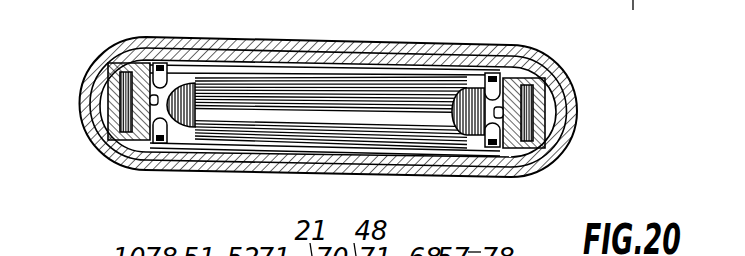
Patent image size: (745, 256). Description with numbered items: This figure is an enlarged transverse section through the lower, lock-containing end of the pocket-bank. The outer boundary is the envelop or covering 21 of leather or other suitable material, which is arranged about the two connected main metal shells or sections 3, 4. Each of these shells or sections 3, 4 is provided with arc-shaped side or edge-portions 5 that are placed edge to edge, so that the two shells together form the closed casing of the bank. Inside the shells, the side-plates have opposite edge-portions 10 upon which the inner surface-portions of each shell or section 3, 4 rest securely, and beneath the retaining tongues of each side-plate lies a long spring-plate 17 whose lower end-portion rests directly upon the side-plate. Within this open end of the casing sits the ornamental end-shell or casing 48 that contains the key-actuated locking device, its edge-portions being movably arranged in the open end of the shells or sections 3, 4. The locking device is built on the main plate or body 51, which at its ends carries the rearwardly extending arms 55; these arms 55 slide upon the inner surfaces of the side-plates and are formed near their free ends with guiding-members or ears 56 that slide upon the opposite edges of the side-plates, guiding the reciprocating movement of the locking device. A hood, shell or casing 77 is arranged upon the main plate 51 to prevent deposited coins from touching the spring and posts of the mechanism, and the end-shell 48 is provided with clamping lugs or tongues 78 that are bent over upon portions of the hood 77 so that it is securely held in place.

The metal shell or section 3 is at (314, 157).
The metal shell or section 4 is at (309, 52).
The arc-shaped side or edge-portion 5 is at (97, 98).
The edge-portion of side-plate 10 is at (140, 64).
The spring-plate 17 is at (114, 118).
The envelop or covering 21 is at (362, 50).
The end-shell or casing 48 is at (228, 62).
The main plate or body 51 is at (258, 72).
The rearwardly extending arm 55 is at (137, 84).
The guiding-member or ear 56 is at (110, 62).
The hood, shell or casing 77 is at (407, 78).
The clamping lug or tongue 78 is at (162, 68).